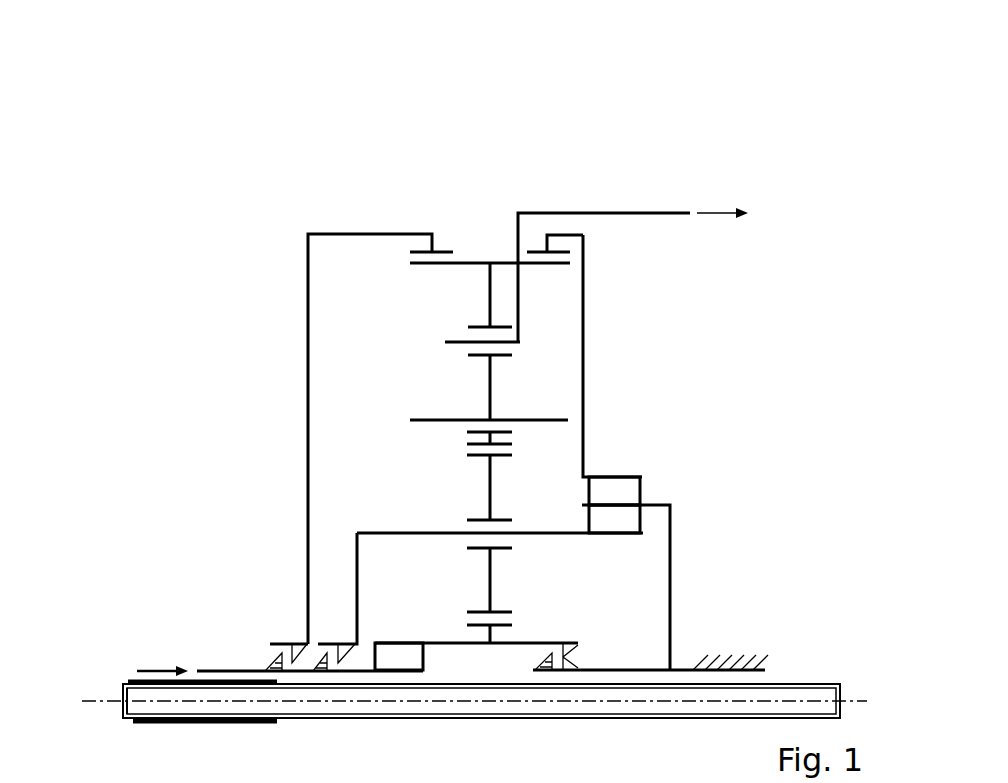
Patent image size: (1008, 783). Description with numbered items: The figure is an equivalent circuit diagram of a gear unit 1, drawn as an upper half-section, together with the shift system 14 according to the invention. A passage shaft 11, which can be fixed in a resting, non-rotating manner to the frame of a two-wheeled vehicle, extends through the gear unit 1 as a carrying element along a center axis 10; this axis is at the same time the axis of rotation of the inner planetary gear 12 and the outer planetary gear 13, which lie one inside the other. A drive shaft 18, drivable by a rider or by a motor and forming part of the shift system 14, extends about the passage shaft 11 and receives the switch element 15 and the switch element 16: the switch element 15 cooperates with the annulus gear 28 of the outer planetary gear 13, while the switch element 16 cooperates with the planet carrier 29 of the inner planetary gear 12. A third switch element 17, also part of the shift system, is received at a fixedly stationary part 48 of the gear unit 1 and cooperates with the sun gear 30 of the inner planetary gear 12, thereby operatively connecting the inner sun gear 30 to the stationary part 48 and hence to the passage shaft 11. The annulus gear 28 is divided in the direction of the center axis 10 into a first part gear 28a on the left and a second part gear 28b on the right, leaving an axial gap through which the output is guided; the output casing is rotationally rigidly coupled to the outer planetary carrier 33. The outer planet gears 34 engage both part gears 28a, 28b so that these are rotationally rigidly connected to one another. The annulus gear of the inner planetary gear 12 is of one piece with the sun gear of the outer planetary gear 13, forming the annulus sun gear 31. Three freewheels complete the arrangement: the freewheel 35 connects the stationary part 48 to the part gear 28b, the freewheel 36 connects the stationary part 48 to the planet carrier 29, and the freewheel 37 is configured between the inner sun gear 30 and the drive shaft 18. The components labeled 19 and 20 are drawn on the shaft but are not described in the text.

The gear unit 1 is at (304, 178).
The center axis 10 is at (107, 695).
The passage shaft 11 is at (127, 692).
The inner planetary gear 12 is at (447, 486).
The outer planetary gear 13 is at (455, 311).
The shift system 14 is at (167, 633).
The switch element 15 is at (290, 671).
The switch element 16 is at (337, 671).
The switch element 17 is at (573, 671).
The drive shaft 18 is at (248, 670).
The hub 19 is at (207, 680).
The hub 20 is at (207, 680).
The annulus gear 28 is at (551, 152).
The first part gear 28a is at (408, 233).
The second part gear 28b is at (560, 234).
The planet carrier 29 is at (532, 532).
The sun gear 30 is at (503, 645).
The annulus sun gear 31 is at (490, 438).
The outer planetary carrier 33 is at (520, 298).
The outer planet gears 34 is at (488, 277).
The freewheel 35 is at (640, 493).
The freewheel 36 is at (640, 522).
The freewheel 37 is at (412, 671).
The fixedly stationary part 48 is at (717, 664).